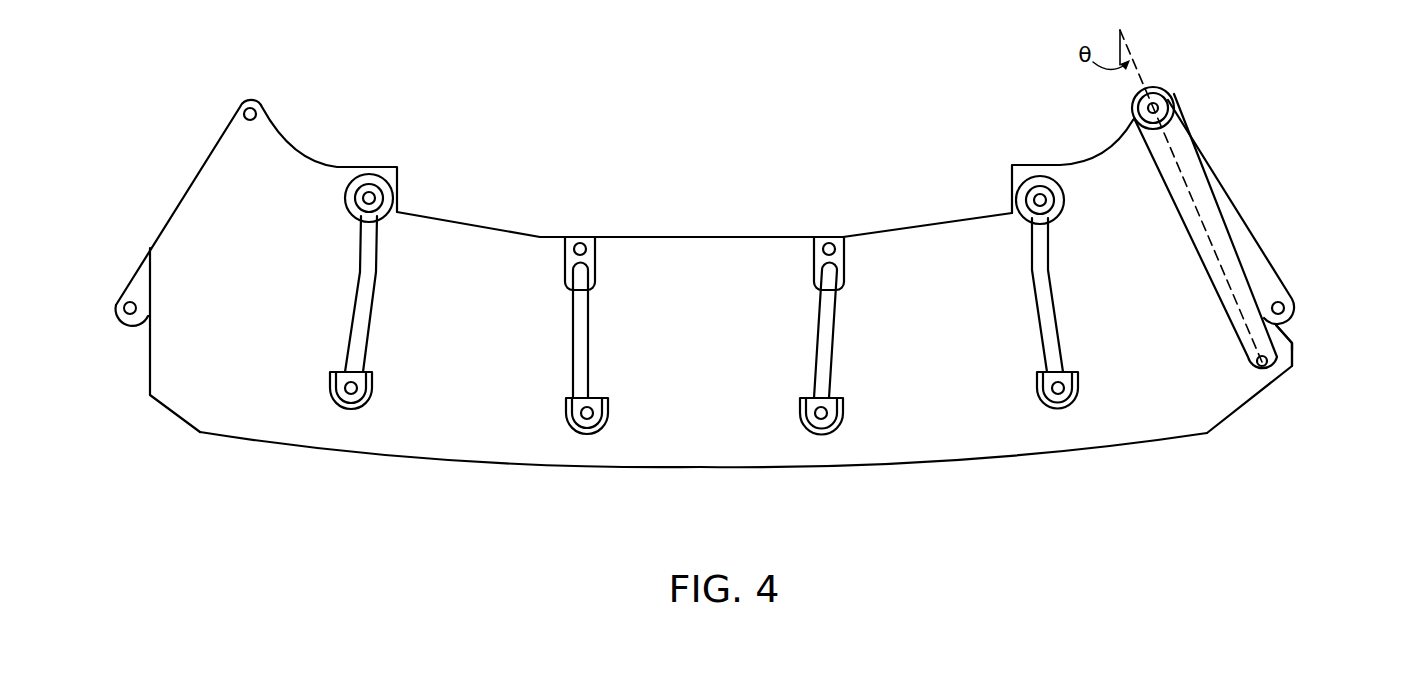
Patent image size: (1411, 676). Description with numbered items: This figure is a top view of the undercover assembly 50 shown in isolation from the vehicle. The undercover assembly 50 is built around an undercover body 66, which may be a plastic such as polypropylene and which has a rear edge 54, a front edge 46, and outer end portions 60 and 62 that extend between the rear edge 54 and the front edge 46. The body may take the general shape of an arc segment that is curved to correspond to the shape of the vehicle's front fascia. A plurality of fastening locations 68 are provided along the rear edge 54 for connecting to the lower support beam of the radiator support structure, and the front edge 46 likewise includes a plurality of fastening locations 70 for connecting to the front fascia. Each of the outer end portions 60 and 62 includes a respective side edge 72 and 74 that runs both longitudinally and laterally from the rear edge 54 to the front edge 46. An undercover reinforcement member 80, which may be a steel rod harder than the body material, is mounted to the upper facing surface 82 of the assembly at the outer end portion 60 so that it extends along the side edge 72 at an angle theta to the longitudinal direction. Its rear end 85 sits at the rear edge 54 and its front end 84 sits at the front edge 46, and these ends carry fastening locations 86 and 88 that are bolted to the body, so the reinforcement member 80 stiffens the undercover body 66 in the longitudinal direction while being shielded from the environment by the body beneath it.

The front edge 46 is at (702, 469).
The undercover assembly 50 is at (1334, 201).
The rear edge 54 is at (698, 237).
The outer end portion 60 is at (1258, 102).
The outer end portion 62 is at (170, 141).
The undercover body 66 is at (481, 200).
The fastening locations 68 is at (583, 230).
The fastening locations 70 is at (565, 470).
The side edge 72 is at (1237, 252).
The side edge 74 is at (158, 234).
The undercover reinforcement member 80 is at (1237, 204).
The upper facing surface 82 is at (930, 223).
The front end 84 is at (1280, 366).
The rear end 85 is at (1176, 97).
The fastening location 86 is at (1296, 335).
The fastening location 88 is at (1130, 122).